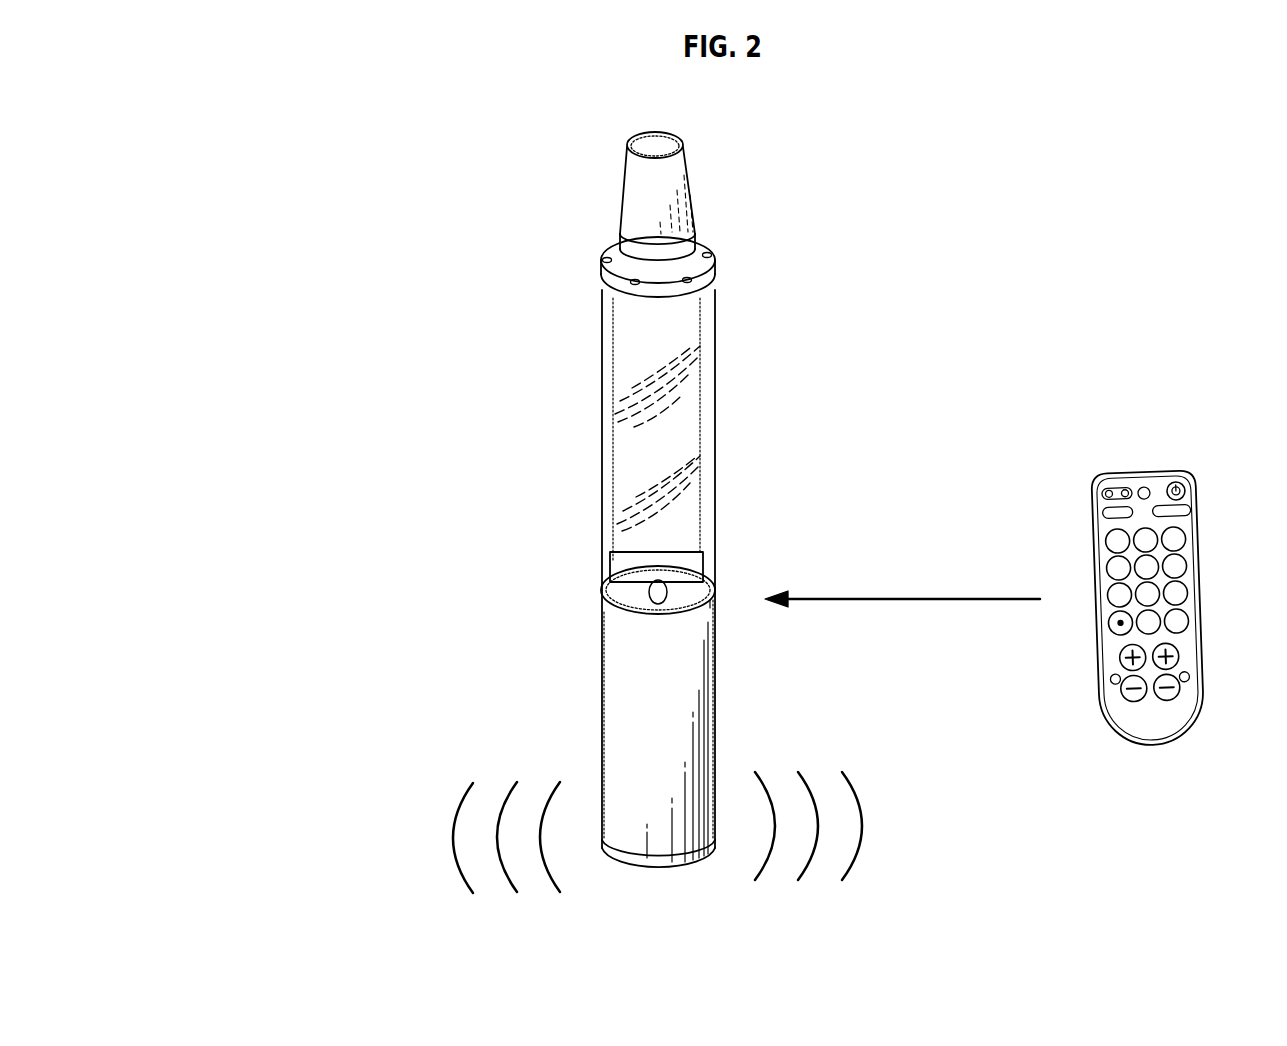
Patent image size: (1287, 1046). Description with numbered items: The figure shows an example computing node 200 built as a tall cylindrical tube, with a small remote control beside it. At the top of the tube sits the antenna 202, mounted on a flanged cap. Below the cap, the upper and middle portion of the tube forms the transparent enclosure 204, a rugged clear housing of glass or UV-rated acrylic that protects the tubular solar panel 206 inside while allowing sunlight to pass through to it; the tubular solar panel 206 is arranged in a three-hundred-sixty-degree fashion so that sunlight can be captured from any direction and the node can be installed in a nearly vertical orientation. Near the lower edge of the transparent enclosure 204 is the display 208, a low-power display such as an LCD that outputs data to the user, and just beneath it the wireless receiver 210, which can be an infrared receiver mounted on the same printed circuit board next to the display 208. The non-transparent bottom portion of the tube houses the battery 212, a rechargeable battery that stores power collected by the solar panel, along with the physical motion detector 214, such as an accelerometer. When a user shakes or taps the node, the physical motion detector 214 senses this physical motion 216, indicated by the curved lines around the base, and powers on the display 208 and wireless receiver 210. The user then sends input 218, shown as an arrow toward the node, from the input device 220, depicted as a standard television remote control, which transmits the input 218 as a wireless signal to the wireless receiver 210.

The computing node 200 is at (530, 95).
The antenna 202 is at (700, 196).
The transparent enclosure 204 is at (587, 348).
The tubular solar panel 206 is at (607, 445).
The display 208 is at (608, 553).
The wireless receiver 210 is at (633, 598).
The battery 212 is at (606, 663).
The physical motion detector 214 is at (612, 717).
The physical motion 216 is at (547, 832).
The input 218 is at (902, 614).
The input device 220 is at (1144, 575).